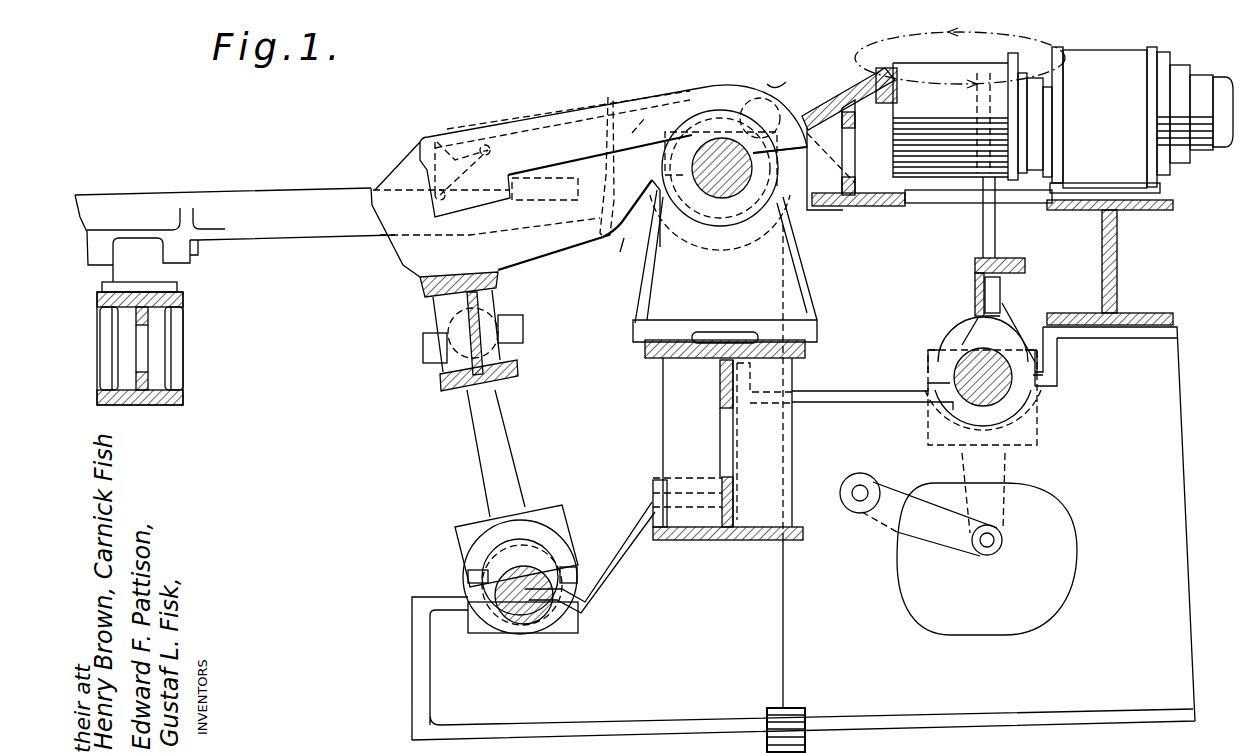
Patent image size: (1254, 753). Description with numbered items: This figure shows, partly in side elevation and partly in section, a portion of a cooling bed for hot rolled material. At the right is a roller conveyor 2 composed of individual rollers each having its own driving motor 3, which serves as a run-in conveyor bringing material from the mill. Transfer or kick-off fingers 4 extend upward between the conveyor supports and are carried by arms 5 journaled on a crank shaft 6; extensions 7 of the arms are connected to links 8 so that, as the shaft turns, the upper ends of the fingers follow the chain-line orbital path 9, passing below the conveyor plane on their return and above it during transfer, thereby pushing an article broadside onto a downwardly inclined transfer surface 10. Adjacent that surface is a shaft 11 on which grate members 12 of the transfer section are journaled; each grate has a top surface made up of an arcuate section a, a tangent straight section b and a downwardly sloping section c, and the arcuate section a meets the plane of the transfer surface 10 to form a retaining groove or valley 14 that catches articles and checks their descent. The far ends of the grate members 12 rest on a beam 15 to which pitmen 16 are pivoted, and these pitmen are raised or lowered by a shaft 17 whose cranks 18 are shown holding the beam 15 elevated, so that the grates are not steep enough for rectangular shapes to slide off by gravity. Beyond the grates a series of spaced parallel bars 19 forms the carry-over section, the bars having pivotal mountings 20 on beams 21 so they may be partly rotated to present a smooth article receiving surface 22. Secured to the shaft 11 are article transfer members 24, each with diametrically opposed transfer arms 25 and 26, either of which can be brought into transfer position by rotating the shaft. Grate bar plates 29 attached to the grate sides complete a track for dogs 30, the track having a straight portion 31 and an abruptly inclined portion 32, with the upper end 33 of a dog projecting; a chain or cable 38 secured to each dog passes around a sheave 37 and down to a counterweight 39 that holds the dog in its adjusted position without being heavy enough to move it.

The roller conveyor 2 is at (943, 163).
The driving motor 3 is at (1094, 58).
The transfer or kick-off fingers 4 is at (995, 225).
The arms 5 is at (1010, 322).
The crank shaft 6 is at (970, 355).
The extensions 7 is at (992, 507).
The links 8 is at (932, 529).
The orbital path 9 is at (941, 37).
The transfer surface 10 is at (829, 95).
The shaft 11 is at (735, 220).
The grate members 12 is at (553, 247).
The retaining groove or valley 14 is at (796, 100).
The beam 15 is at (445, 308).
The pitmen 16 is at (478, 440).
The shaft 17 is at (523, 637).
The cranks 18 is at (526, 537).
The spaced parallel bars 19 is at (228, 203).
The pivotal mountings 20 is at (147, 252).
The beams 21 is at (160, 350).
The article receiving surface 22 is at (302, 190).
The article transfer members 24 is at (632, 133).
The transfer arm 25 is at (614, 258).
The transfer arm 26 is at (860, 205).
The grate bar plates 29 is at (639, 200).
The dogs 30 is at (455, 145).
The straight portion 31 is at (600, 155).
The abruptly inclined portion 32 is at (512, 190).
The upper end 33 is at (437, 143).
The sheave 37 is at (758, 100).
The chain or cable 38 is at (748, 80).
The counterweight 39 is at (806, 743).
The arcuate section a is at (776, 72).
The straight section b is at (536, 116).
The downwardly sloping section c is at (405, 157).